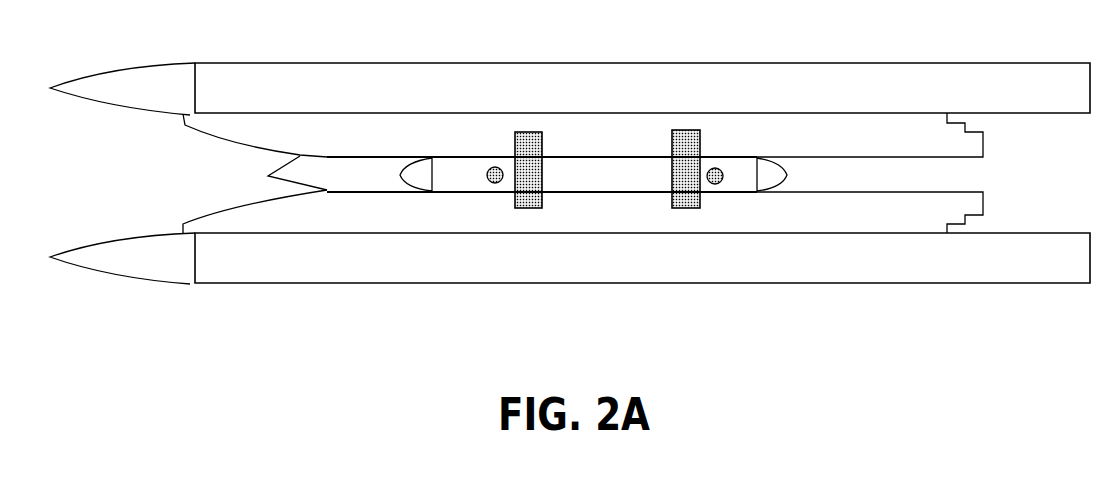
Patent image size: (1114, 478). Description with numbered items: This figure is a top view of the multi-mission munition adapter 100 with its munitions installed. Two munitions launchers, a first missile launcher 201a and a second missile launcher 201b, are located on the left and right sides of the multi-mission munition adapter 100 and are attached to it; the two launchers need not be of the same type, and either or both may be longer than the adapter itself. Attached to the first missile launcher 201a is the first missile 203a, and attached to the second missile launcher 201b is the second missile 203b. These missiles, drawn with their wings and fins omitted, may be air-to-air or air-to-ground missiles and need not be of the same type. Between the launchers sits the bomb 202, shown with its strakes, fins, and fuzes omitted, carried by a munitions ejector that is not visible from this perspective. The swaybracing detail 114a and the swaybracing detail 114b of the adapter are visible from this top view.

The multi-mission munition adapter 100 is at (600, 158).
The swaybracing detail 114a is at (515, 132).
The swaybracing detail 114b is at (672, 130).
The first missile launcher 201a is at (547, 222).
The second missile launcher 201b is at (362, 133).
The bomb 202 is at (273, 172).
The first missile 203a is at (232, 281).
The second missile 203b is at (235, 63).